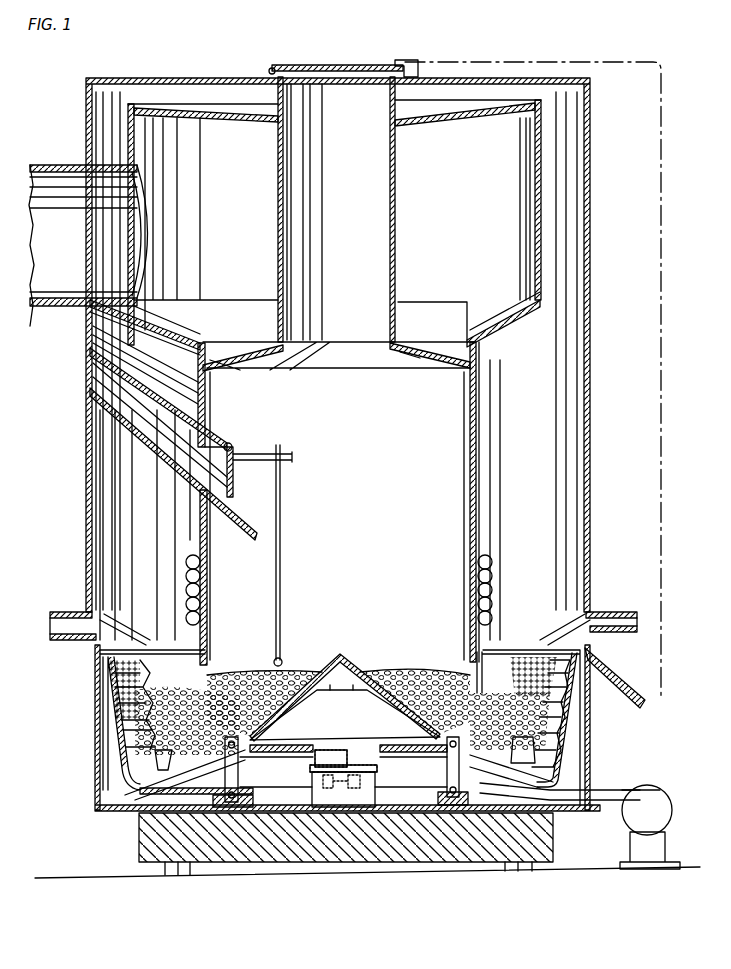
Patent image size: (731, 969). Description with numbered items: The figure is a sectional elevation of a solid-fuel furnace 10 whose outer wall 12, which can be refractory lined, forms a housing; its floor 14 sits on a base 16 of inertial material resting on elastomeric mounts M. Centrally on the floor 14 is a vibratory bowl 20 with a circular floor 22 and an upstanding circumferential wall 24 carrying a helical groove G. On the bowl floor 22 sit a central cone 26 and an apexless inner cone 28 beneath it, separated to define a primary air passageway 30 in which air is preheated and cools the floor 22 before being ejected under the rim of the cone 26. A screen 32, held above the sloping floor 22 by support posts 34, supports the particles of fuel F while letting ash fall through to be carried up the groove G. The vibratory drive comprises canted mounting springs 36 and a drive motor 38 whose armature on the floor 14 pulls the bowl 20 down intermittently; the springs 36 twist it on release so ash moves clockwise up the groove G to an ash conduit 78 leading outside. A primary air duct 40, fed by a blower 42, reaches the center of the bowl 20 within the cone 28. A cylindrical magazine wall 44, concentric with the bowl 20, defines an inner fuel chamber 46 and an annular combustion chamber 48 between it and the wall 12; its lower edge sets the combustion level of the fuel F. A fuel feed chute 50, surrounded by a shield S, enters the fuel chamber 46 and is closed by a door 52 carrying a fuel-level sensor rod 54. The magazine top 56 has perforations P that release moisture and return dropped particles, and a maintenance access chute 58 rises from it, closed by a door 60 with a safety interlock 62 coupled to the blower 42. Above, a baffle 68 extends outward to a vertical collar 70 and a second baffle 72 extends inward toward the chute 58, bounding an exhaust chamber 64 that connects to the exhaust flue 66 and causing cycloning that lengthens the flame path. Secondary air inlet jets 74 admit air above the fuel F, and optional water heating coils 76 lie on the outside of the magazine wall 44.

The furnace 10 is at (50, 481).
The outer wall 12 is at (86, 527).
The floor 14 is at (118, 810).
The base 16 is at (140, 845).
The vibratory bowl 20 is at (575, 745).
The floor of the bowl 22 is at (570, 768).
The circumferential wall 24 is at (580, 720).
The central cone 26 is at (352, 662).
The inner cone 28 is at (395, 712).
The primary air passageway 30 is at (338, 672).
The screen 32 is at (110, 780).
The support posts 34 is at (125, 790).
The mounting springs 36 is at (242, 770).
The vibratory drive motor 38 is at (330, 800).
The primary air duct 40 is at (550, 805).
The blower 42 is at (640, 812).
The magazine wall 44 is at (203, 530).
The fuel chamber 46 is at (323, 561).
The combustion chamber 48 is at (528, 409).
The fuel feed chute 50 is at (97, 378).
The door 52 is at (240, 486).
The fuel-level sensor rod 54 is at (286, 545).
The top 56 is at (358, 355).
The maintenance access chute 58 is at (336, 209).
The door 60 is at (330, 66).
The safety interlock 62 is at (418, 62).
The exhaust chamber 64 is at (502, 195).
The exhaust flue 66 is at (75, 170).
The baffle 68 is at (205, 318).
The collar 70 is at (535, 228).
The baffle 72 is at (212, 118).
The secondary air inlet jets 74 is at (75, 615).
The water heating coils 76 is at (188, 615).
The ash conduit 78 is at (615, 690).
The shield S is at (95, 445).
The perforations P is at (438, 348).
The fuel F is at (244, 662).
The spiral groove G is at (95, 720).
The mounts M is at (178, 874).